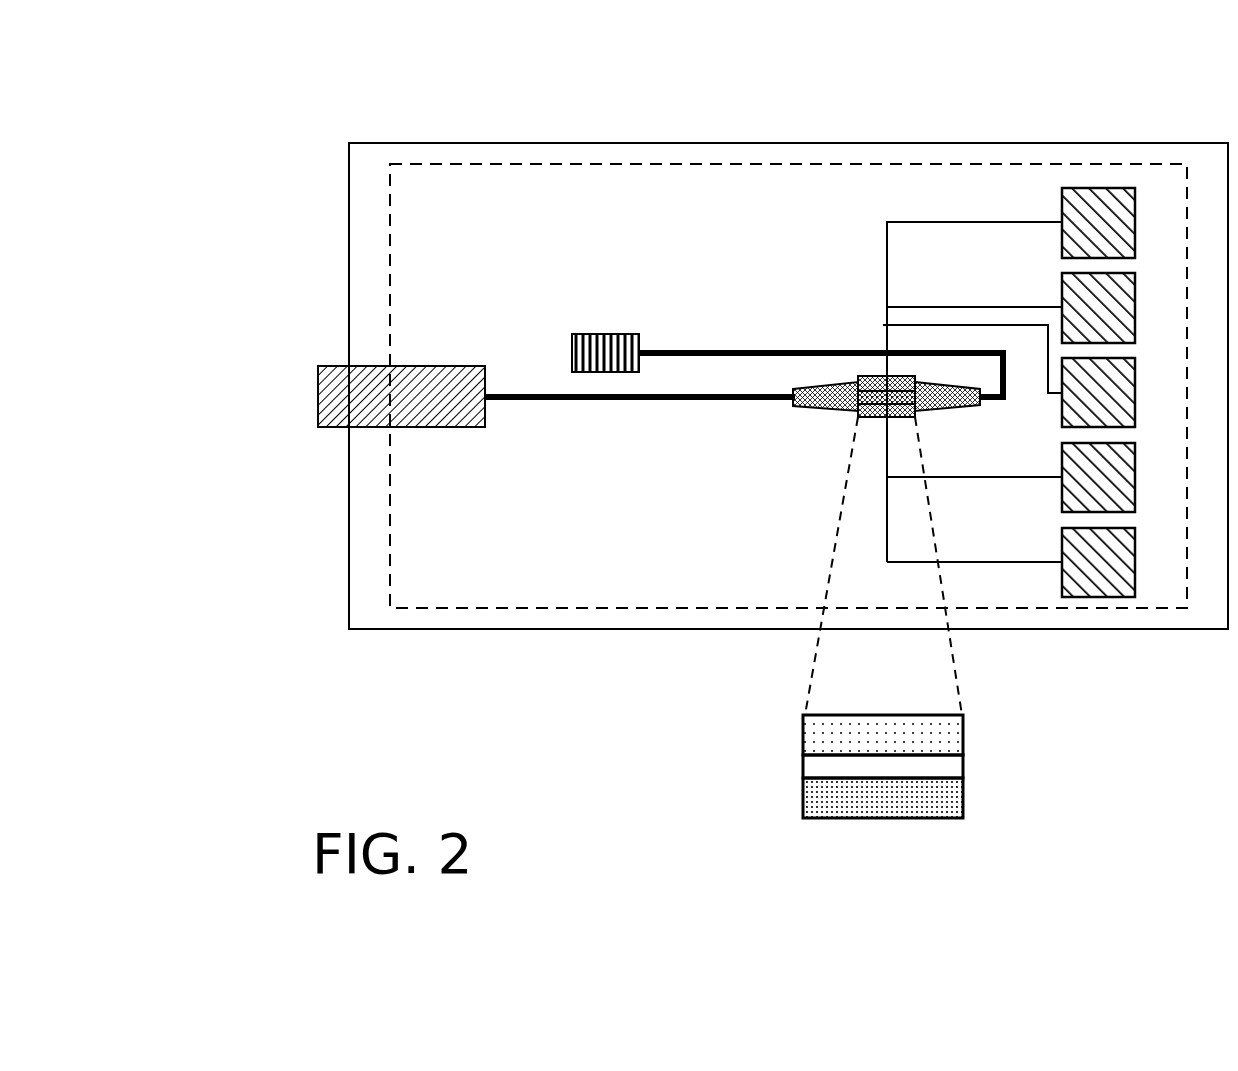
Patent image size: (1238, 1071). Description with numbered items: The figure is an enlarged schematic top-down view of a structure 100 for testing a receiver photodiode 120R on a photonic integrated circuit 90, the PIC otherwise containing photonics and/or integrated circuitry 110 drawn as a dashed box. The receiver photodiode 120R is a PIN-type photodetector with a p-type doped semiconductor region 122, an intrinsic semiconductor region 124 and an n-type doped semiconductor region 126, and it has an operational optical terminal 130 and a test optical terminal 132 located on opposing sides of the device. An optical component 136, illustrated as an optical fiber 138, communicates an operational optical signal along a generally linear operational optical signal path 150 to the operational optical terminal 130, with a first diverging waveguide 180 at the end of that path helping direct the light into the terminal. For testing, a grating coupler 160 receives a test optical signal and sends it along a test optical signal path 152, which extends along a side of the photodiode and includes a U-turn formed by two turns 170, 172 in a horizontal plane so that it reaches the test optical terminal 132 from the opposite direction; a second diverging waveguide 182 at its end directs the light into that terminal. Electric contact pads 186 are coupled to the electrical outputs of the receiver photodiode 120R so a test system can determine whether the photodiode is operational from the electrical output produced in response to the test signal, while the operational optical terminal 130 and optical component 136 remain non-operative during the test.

The photonic integrated circuit (PIC) 90 is at (1150, 138).
The structure 100 is at (697, 495).
The photonics and/or integrated circuitry 110 is at (703, 164).
The receiver photodiode 120R is at (880, 386).
The p-type doped semiconductor region 122 is at (820, 735).
The intrinsic semiconductor region 124 is at (866, 765).
The n-type doped semiconductor region 126 is at (922, 795).
The operational optical terminal 130 is at (883, 813).
The test optical terminal 132 is at (921, 813).
The optical component 136 is at (346, 338).
The optical fiber 138 is at (355, 390).
The operational optical signal path 150 is at (519, 394).
The test optical signal path 152 is at (748, 350).
The grating coupler 160 is at (597, 358).
The turn 170 is at (1003, 352).
The turn 172 is at (1005, 398).
The first diverging waveguide 180 is at (835, 395).
The second diverging waveguide 182 is at (937, 397).
The electric contact pads 186 is at (1097, 388).